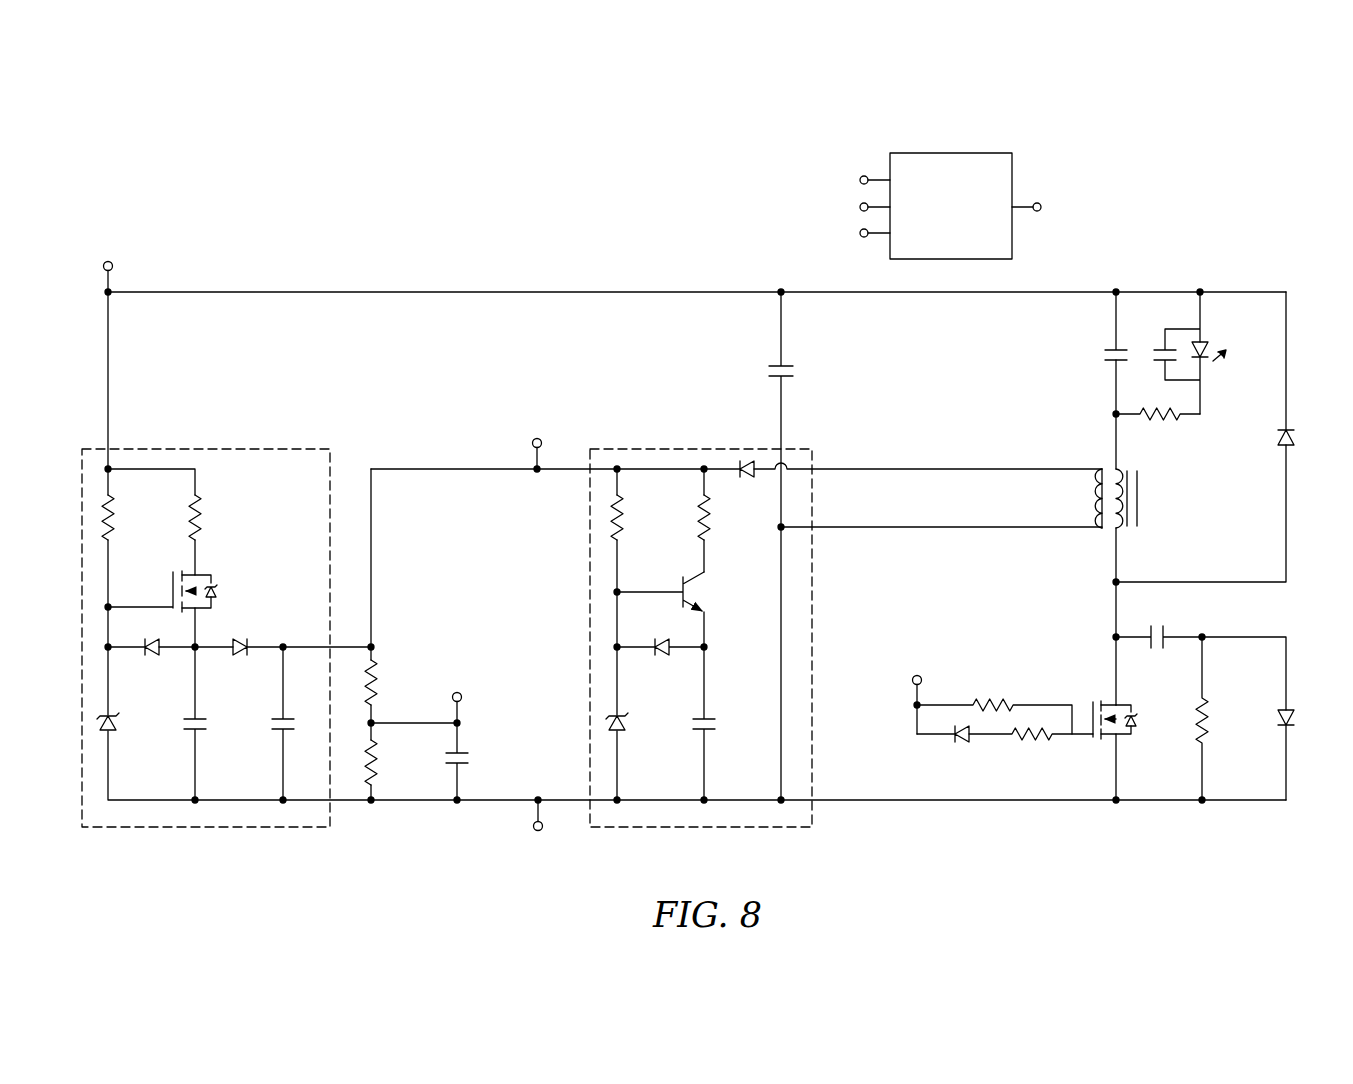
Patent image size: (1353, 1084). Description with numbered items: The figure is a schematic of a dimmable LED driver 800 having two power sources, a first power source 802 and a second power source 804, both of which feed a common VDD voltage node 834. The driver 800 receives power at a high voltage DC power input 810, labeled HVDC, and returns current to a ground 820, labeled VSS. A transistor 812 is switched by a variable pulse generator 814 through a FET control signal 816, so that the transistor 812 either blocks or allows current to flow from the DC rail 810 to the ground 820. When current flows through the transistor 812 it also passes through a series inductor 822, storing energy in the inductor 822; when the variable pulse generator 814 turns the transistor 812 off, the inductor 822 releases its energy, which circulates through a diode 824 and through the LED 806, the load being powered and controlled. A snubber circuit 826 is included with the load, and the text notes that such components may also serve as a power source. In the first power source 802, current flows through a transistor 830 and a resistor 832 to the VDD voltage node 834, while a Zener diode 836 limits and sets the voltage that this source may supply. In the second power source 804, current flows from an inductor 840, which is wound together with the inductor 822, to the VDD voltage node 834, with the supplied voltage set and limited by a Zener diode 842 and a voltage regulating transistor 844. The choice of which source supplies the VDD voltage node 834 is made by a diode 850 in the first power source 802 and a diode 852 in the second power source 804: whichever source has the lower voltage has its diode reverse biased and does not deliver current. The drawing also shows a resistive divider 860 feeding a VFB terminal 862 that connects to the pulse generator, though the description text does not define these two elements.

The dimmable LED driver 800 is at (367, 131).
The first power source 802 is at (248, 449).
The second power source 804 is at (677, 449).
The LED light 806 is at (1205, 360).
The high voltage DC power input 810 is at (261, 292).
The transistor 812 is at (1093, 705).
The variable pulse generator 814 is at (924, 153).
The FET control signal 816 is at (1085, 208).
The ground 820 is at (519, 848).
The series inductor 822 is at (1119, 525).
The diode 824 is at (1280, 447).
The snubber circuit 826 is at (1259, 623).
The transistor 830 is at (172, 580).
The resistor 832 is at (203, 526).
The VDD voltage node 834 is at (537, 410).
The Zener diode 836 is at (113, 732).
The inductor 840 is at (1093, 503).
The Zener diode 842 is at (621, 732).
The voltage regulating transistor 844 is at (695, 577).
The diode 850 is at (242, 638).
The diode 852 is at (747, 464).
The feedback voltage divider 860 is at (387, 634).
The VFB feedback node 862 is at (458, 662).